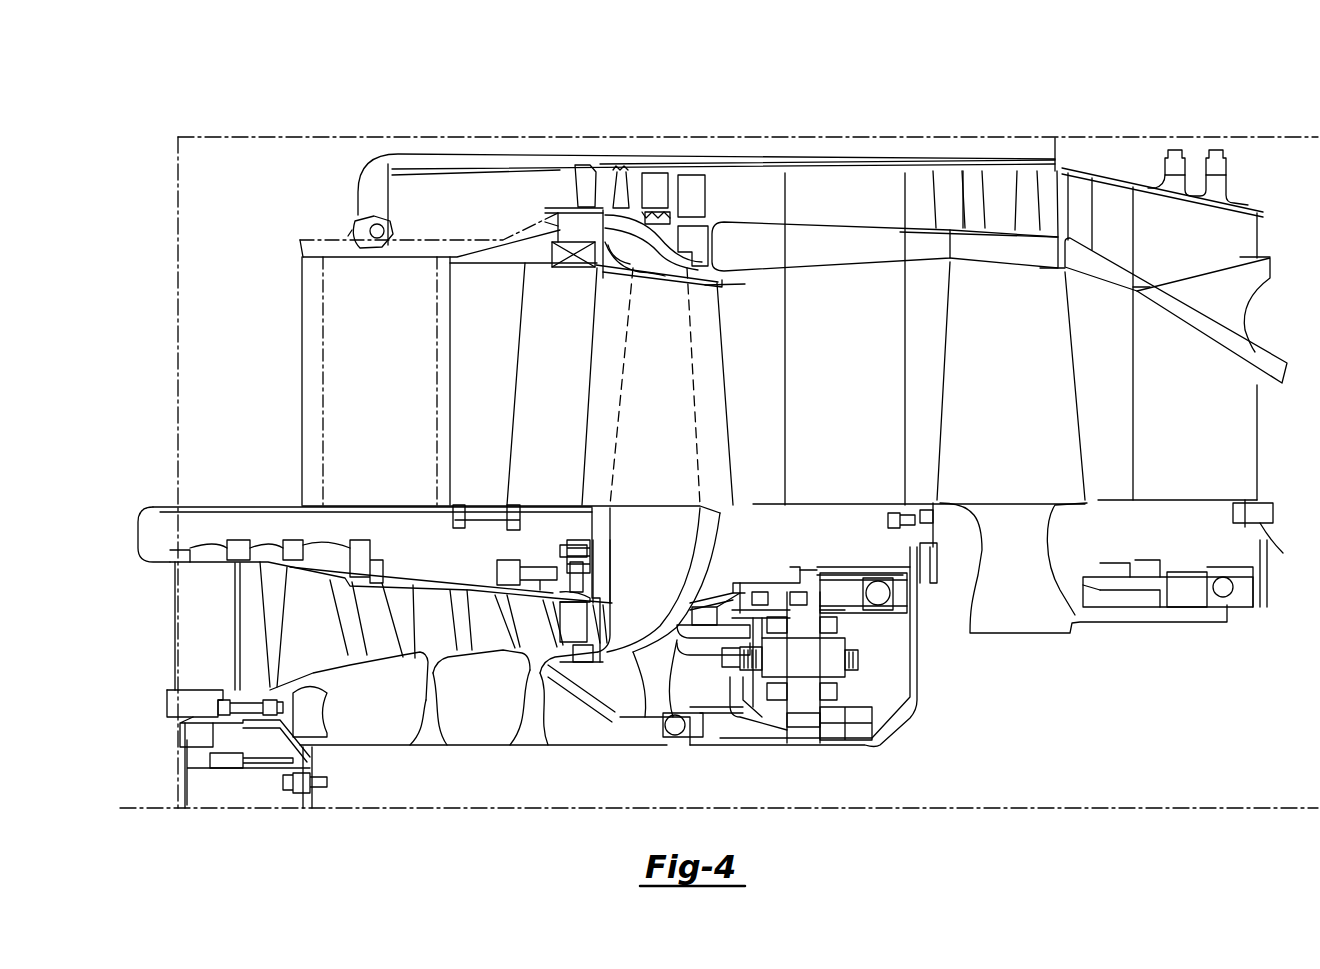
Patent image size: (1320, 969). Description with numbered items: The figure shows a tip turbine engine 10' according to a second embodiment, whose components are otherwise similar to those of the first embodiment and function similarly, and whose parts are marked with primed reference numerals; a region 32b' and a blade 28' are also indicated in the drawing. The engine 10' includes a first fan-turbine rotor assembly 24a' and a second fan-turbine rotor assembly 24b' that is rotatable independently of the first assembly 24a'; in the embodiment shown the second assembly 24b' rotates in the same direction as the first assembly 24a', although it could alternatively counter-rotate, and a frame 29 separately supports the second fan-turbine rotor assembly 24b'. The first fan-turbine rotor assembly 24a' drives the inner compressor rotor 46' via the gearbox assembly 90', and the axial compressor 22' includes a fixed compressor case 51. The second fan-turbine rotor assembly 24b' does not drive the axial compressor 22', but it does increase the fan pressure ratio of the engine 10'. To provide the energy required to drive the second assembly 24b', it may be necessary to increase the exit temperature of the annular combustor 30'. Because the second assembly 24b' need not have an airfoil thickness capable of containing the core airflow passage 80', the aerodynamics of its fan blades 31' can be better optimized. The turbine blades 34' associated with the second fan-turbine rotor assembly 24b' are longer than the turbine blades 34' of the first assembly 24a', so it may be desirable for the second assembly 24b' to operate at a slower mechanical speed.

The tip turbine engine 10' is at (719, 433).
The axial compressor 22' is at (374, 656).
The first fan-turbine rotor assembly 24a' is at (511, 403).
The second fan-turbine rotor assembly 24b' is at (1020, 338).
The fan blade 28' is at (449, 381).
The frame 29 is at (782, 368).
The annular combustor 30' is at (701, 159).
The fan blades 31' is at (956, 278).
The engine static structure 32b' is at (1184, 121).
The turbine blades 34' is at (904, 282).
The inner compressor rotor 46' is at (706, 652).
The fixed compressor case 51 is at (468, 584).
The core airflow passage 80' is at (693, 386).
The gearbox assembly 90' is at (800, 690).